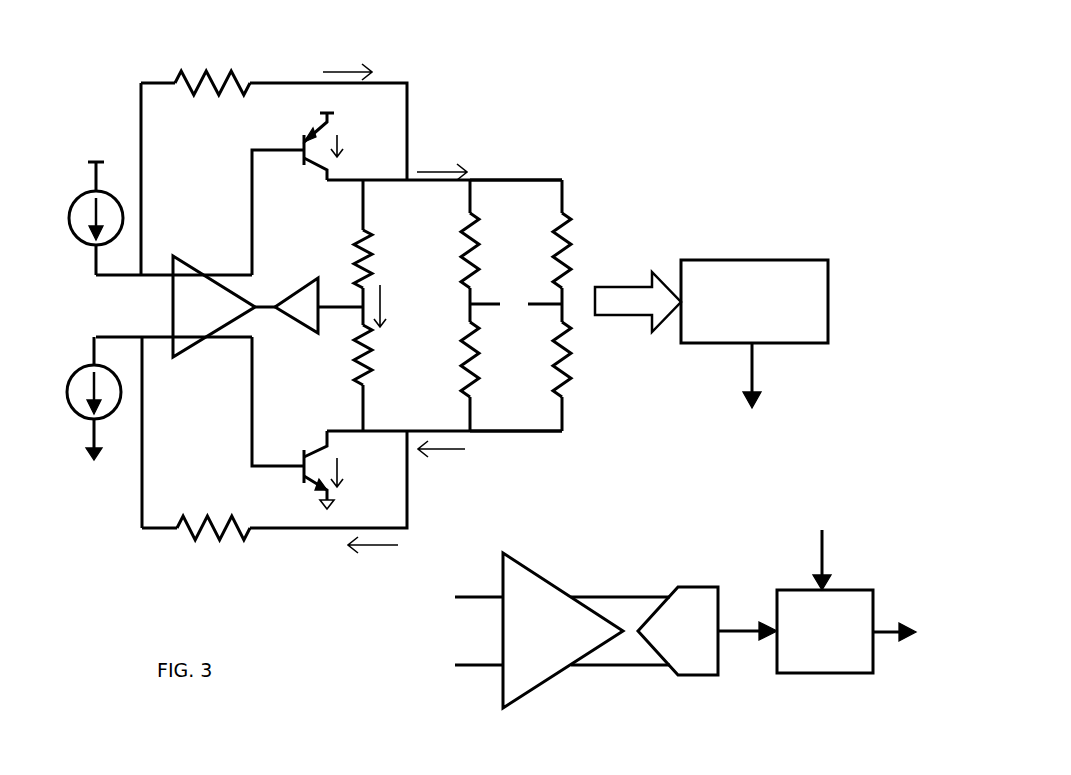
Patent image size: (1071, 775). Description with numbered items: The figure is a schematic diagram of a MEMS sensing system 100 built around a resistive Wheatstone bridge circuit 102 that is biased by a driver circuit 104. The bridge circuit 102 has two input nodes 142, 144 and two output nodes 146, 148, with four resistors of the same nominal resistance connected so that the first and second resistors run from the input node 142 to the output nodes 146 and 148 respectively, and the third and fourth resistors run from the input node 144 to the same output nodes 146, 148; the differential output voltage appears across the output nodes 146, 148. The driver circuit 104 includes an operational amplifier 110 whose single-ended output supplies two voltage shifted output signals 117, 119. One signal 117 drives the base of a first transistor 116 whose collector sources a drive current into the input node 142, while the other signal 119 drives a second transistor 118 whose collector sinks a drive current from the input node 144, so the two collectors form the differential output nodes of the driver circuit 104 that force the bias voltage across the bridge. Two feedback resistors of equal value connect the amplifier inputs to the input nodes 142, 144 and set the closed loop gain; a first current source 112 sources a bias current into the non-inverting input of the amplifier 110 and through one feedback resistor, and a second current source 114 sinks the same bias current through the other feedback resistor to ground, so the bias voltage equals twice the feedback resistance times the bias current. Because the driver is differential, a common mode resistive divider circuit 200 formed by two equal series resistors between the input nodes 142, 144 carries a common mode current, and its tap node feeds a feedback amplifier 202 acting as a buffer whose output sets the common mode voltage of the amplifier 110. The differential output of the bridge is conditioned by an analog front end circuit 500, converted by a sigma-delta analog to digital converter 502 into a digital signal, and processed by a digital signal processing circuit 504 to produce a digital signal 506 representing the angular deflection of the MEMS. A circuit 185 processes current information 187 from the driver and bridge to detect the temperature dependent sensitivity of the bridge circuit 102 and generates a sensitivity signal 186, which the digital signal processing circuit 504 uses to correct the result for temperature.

The MEMS sensing system 100 is at (832, 152).
The resistive Wheatstone bridge circuit 102 is at (557, 155).
The driver circuit 104 is at (116, 77).
The operational amplifier 110 is at (220, 317).
The first current source 112 is at (113, 192).
The second current source 114 is at (107, 418).
The first transistor 116 is at (298, 132).
The voltage shifted output signal 117 is at (250, 214).
The second transistor 118 is at (298, 484).
The voltage shifted output signal 119 is at (250, 412).
The input node 142 is at (512, 183).
The input node 144 is at (518, 429).
The output node 146 is at (490, 302).
The output node 148 is at (530, 309).
The circuit 185 is at (752, 258).
The sensitivity signal S 186 is at (746, 364).
The current information 187 is at (628, 285).
The common mode resistive divider circuit 200 is at (350, 213).
The feedback amplifier 202 is at (298, 326).
The analog front end circuit 500 is at (565, 641).
The sigma-delta analog to digital converter 502 is at (693, 680).
The digital signal processing circuit 504 is at (858, 588).
The digital signal 506 is at (905, 625).